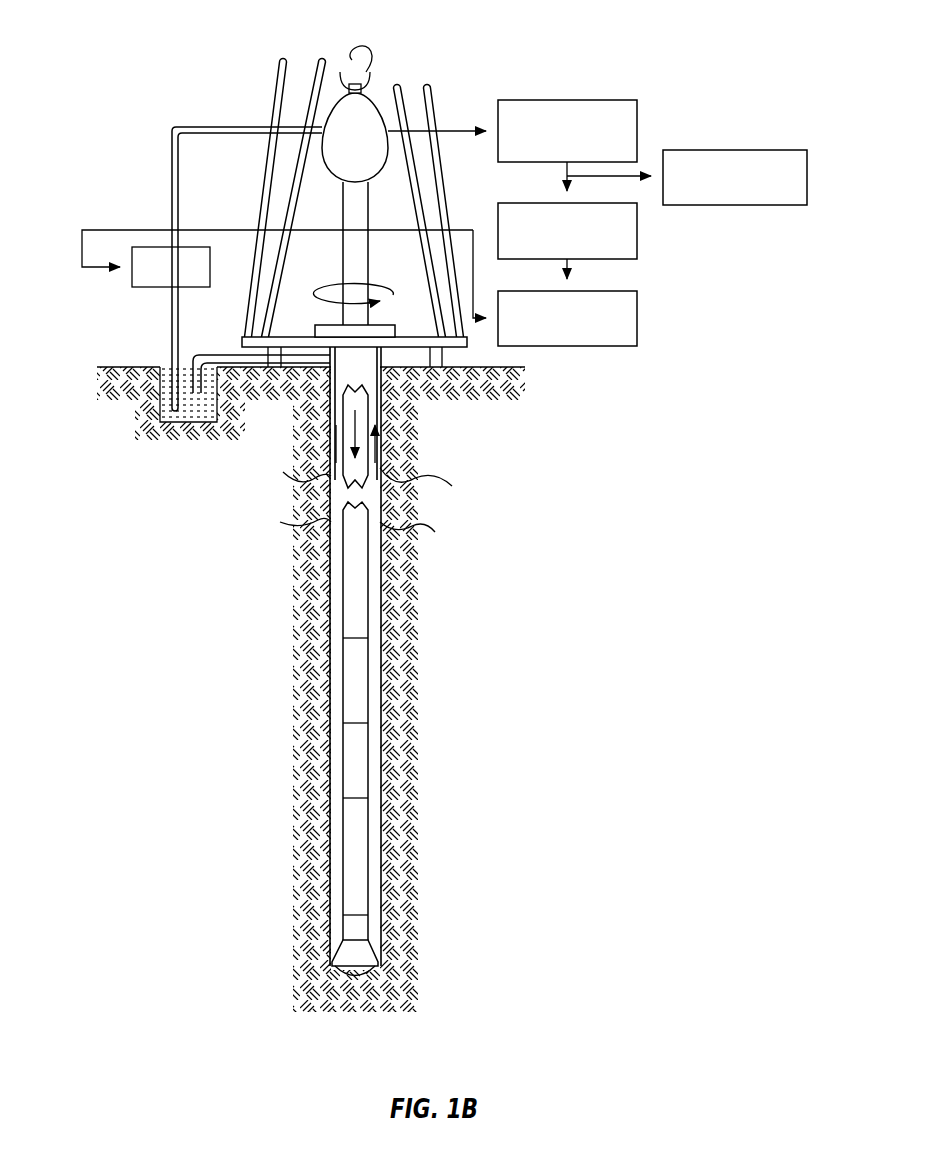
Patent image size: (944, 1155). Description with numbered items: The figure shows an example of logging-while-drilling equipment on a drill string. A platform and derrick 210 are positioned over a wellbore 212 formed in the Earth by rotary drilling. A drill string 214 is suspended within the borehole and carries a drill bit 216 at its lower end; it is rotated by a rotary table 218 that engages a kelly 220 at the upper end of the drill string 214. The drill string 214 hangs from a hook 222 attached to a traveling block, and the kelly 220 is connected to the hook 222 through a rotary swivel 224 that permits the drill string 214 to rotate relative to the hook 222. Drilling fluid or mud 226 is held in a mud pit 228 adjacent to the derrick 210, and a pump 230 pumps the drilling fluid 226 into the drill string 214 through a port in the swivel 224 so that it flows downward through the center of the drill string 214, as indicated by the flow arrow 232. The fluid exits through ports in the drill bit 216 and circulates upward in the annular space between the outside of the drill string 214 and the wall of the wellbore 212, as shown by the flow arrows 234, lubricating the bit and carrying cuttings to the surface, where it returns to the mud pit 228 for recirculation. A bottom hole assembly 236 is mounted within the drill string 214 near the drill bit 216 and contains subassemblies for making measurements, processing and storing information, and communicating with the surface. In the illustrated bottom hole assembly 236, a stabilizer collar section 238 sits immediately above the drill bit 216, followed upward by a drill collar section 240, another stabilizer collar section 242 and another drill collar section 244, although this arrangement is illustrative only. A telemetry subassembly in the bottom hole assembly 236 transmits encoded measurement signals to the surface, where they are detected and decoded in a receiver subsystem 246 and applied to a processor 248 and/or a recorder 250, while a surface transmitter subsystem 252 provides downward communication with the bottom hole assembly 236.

The platform and derrick 210 is at (482, 343).
The wellbore 212 is at (382, 490).
The drill string 214 is at (344, 739).
The drill bit 216 is at (353, 953).
The rotary table 218 is at (368, 330).
The kelly 220 is at (356, 204).
The hook 222 is at (363, 57).
The rotary swivel 224 is at (350, 125).
The drilling fluid 226 is at (175, 428).
The mud pit 228 is at (160, 404).
The pump 230 is at (167, 247).
The flow arrow 232 is at (360, 470).
The flow arrows 234 is at (378, 440).
The bottom hole assembly 236 is at (429, 922).
The stabilizer collar section 238 is at (352, 837).
The drill collar section 240 is at (343, 760).
The stabilizer collar section 242 is at (352, 683).
The drill collar section 244 is at (343, 600).
The receiver subsystem 246 is at (580, 100).
The processor 248 is at (637, 247).
The recorder 250 is at (745, 150).
The surface transmitter subsystem 252 is at (637, 325).